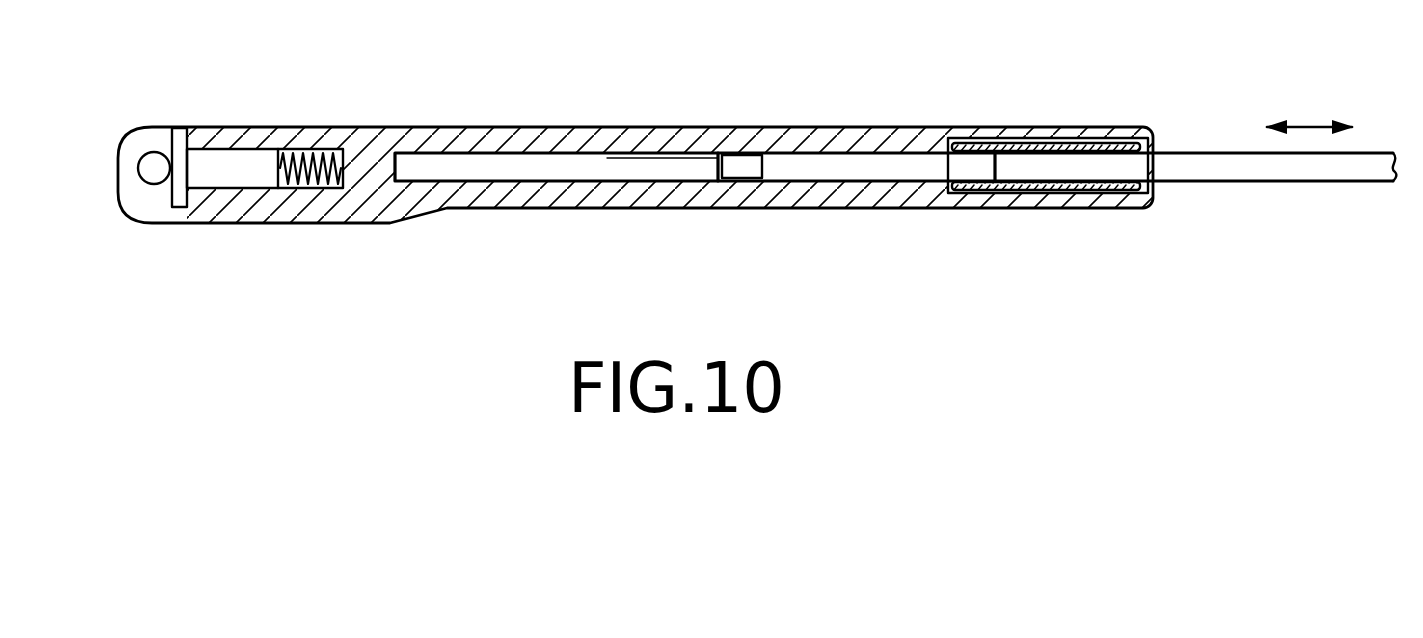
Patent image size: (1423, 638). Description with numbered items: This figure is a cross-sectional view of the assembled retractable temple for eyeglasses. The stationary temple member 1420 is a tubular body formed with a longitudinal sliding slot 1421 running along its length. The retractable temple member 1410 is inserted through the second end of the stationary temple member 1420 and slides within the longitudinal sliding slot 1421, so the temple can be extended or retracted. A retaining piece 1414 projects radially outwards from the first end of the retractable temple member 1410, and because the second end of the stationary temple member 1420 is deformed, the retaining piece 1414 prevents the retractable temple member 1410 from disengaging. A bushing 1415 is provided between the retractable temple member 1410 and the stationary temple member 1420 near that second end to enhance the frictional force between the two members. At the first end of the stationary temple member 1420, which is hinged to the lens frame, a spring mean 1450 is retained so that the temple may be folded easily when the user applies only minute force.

The retractable temple member 1410 is at (1203, 197).
The retaining piece 1414 is at (752, 167).
The bushing 1415 is at (1080, 147).
The stationary temple member 1420 is at (389, 227).
The longitudinal sliding slot 1421 is at (588, 163).
The spring mean 1450 is at (311, 163).